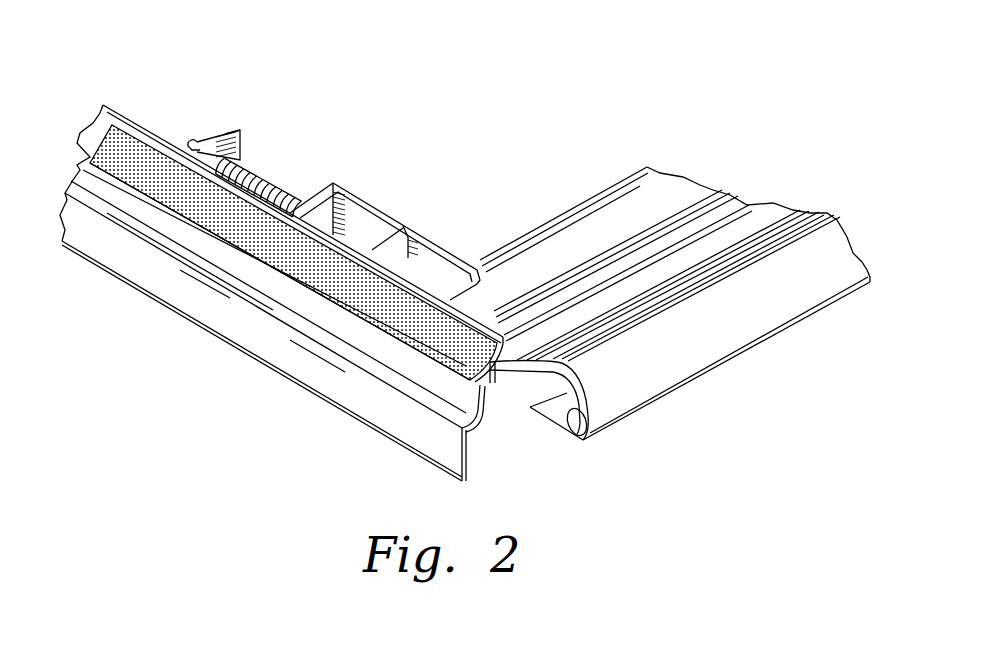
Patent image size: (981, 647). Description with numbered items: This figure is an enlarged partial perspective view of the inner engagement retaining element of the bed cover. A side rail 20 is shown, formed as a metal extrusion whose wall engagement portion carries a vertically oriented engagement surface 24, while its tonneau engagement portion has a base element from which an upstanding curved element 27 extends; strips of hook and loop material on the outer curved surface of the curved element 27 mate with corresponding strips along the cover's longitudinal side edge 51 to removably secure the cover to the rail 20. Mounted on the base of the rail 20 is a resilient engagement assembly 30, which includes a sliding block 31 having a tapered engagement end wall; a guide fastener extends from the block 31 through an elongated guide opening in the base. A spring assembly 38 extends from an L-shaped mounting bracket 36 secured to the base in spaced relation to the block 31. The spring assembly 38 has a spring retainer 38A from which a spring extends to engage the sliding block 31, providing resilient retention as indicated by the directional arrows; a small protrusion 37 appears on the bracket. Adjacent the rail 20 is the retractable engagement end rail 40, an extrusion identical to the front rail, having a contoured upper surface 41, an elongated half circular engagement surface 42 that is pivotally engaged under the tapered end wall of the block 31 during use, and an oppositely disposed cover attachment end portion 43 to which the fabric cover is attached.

The side rail 20 is at (281, 254).
The vertically oriented engagement surface 24 is at (288, 350).
The upstanding curved element 27 is at (281, 263).
The resilient engagement assembly 30 is at (331, 155).
The sliding block 31 is at (370, 205).
The L-shaped mounting bracket 36 is at (237, 127).
The protrusion 37 is at (193, 143).
The spring assembly 38 is at (262, 150).
The spring retainer 38A is at (297, 197).
The retractable engagement end rail 40 is at (675, 279).
The contoured upper surface 41 is at (640, 283).
The elongated engagement surface 42 is at (607, 190).
The cover attachment end portion 43 is at (607, 390).
The longitudinal side edge 51 is at (450, 350).